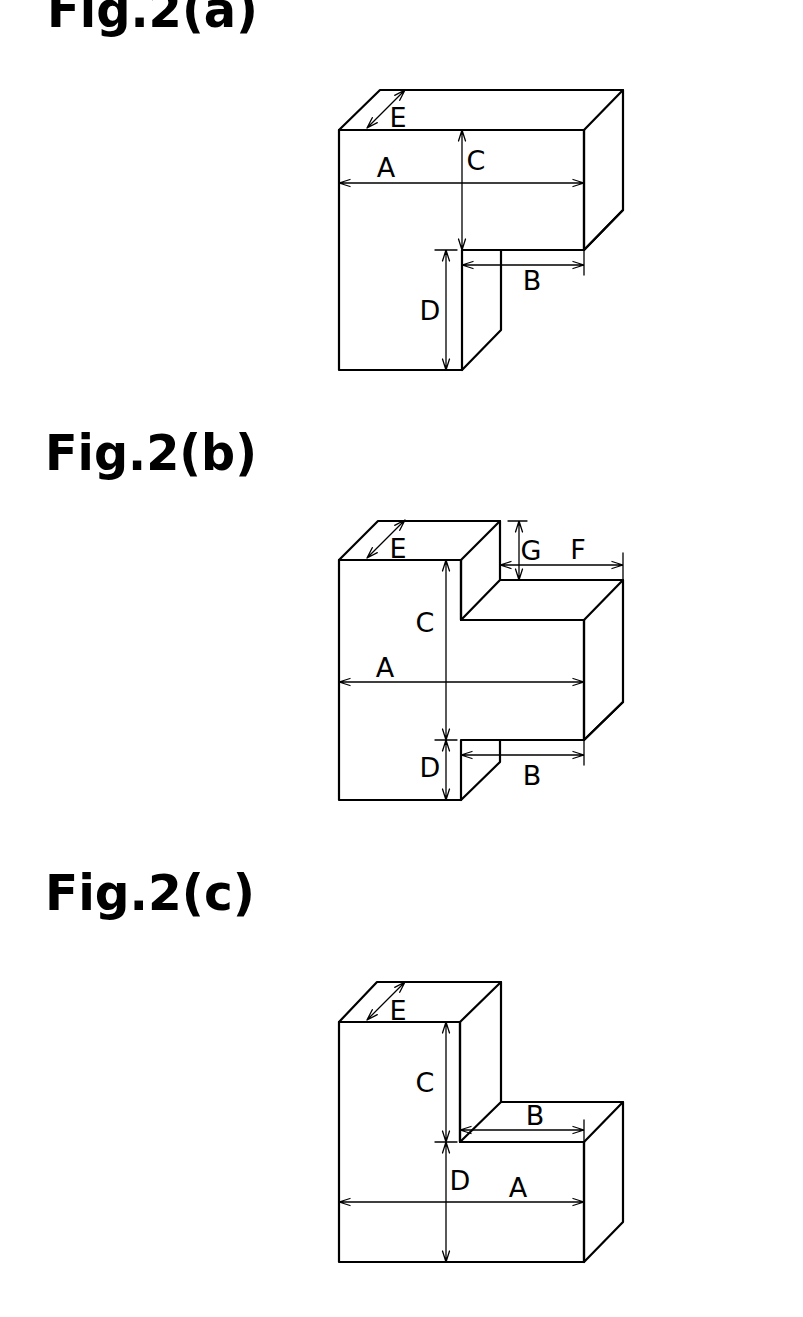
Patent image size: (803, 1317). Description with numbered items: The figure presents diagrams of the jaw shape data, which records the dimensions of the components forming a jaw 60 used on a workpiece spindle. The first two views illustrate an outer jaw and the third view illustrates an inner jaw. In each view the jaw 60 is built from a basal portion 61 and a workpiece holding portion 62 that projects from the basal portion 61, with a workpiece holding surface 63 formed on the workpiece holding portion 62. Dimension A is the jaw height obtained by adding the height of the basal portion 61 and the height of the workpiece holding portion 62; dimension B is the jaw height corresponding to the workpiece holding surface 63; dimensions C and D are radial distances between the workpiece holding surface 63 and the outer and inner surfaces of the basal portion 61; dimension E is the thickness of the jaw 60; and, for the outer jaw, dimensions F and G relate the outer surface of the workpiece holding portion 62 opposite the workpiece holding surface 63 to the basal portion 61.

In FIG. 2A, the jaw 60 is at (492, 202).
In FIG. 2B, the jaw 60 is at (492, 660).
In FIG. 2C, the jaw 60 is at (492, 1122).
In FIG. 2A, the basal portion 61 is at (347, 282).
In FIG. 2B, the basal portion 61 is at (347, 709).
In FIG. 2C, the basal portion 61 is at (347, 1126).
In FIG. 2A, the workpiece holding portion 62 is at (620, 157).
In FIG. 2B, the workpiece holding portion 62 is at (620, 648).
In FIG. 2C, the workpiece holding portion 62 is at (620, 1170).
In FIG. 2A, the workpiece holding surface 63 is at (603, 232).
In FIG. 2B, the workpiece holding surface 63 is at (603, 722).
In FIG. 2C, the workpiece holding surface 63 is at (598, 1110).